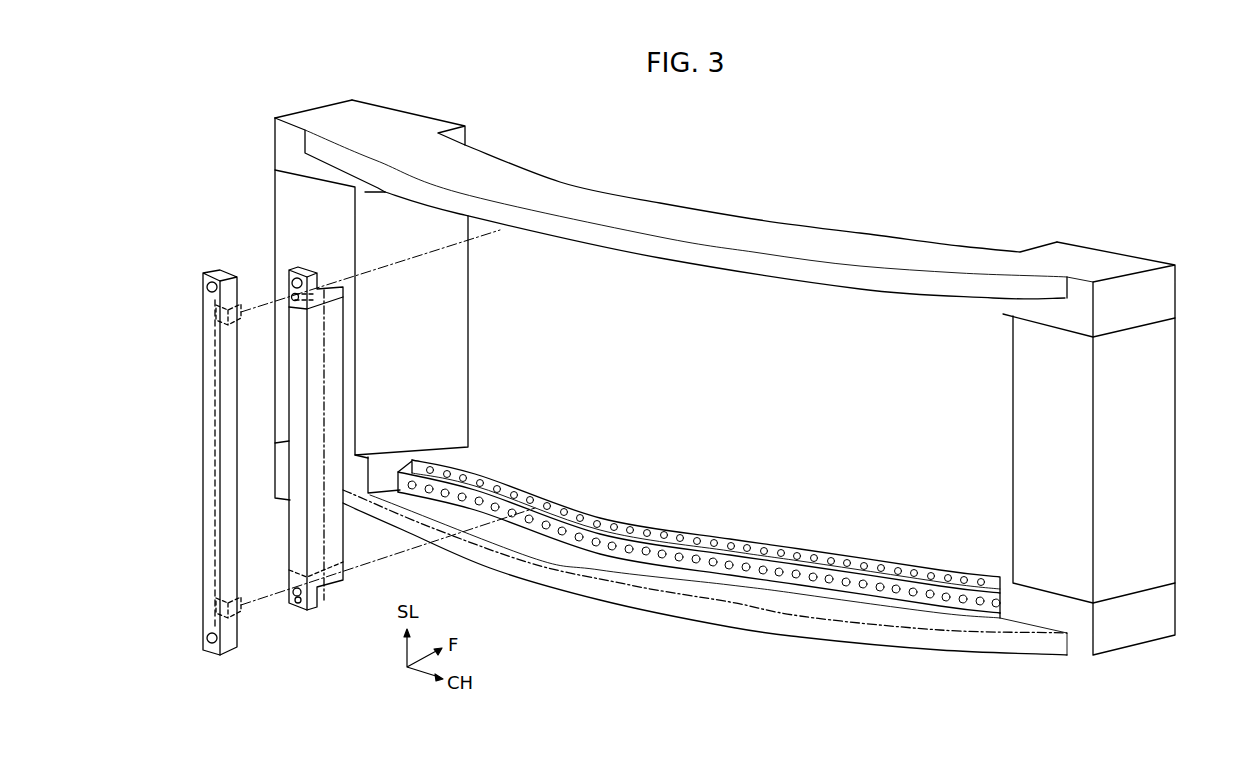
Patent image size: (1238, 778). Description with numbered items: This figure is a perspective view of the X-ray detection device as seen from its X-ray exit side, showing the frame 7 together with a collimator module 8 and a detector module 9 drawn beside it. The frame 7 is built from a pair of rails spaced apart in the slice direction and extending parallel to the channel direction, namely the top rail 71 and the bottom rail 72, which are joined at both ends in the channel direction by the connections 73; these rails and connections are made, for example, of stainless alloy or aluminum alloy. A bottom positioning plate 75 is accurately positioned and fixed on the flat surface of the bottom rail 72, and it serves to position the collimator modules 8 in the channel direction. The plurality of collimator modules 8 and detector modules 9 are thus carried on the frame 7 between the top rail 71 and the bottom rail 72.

The frame 7 is at (723, 381).
The top rail 71 is at (728, 220).
The bottom rail 72 is at (667, 608).
The connections 73 is at (285, 193).
The bottom positioning plate 75 is at (485, 480).
The collimator module 8 is at (292, 537).
The detector module 9 is at (203, 556).